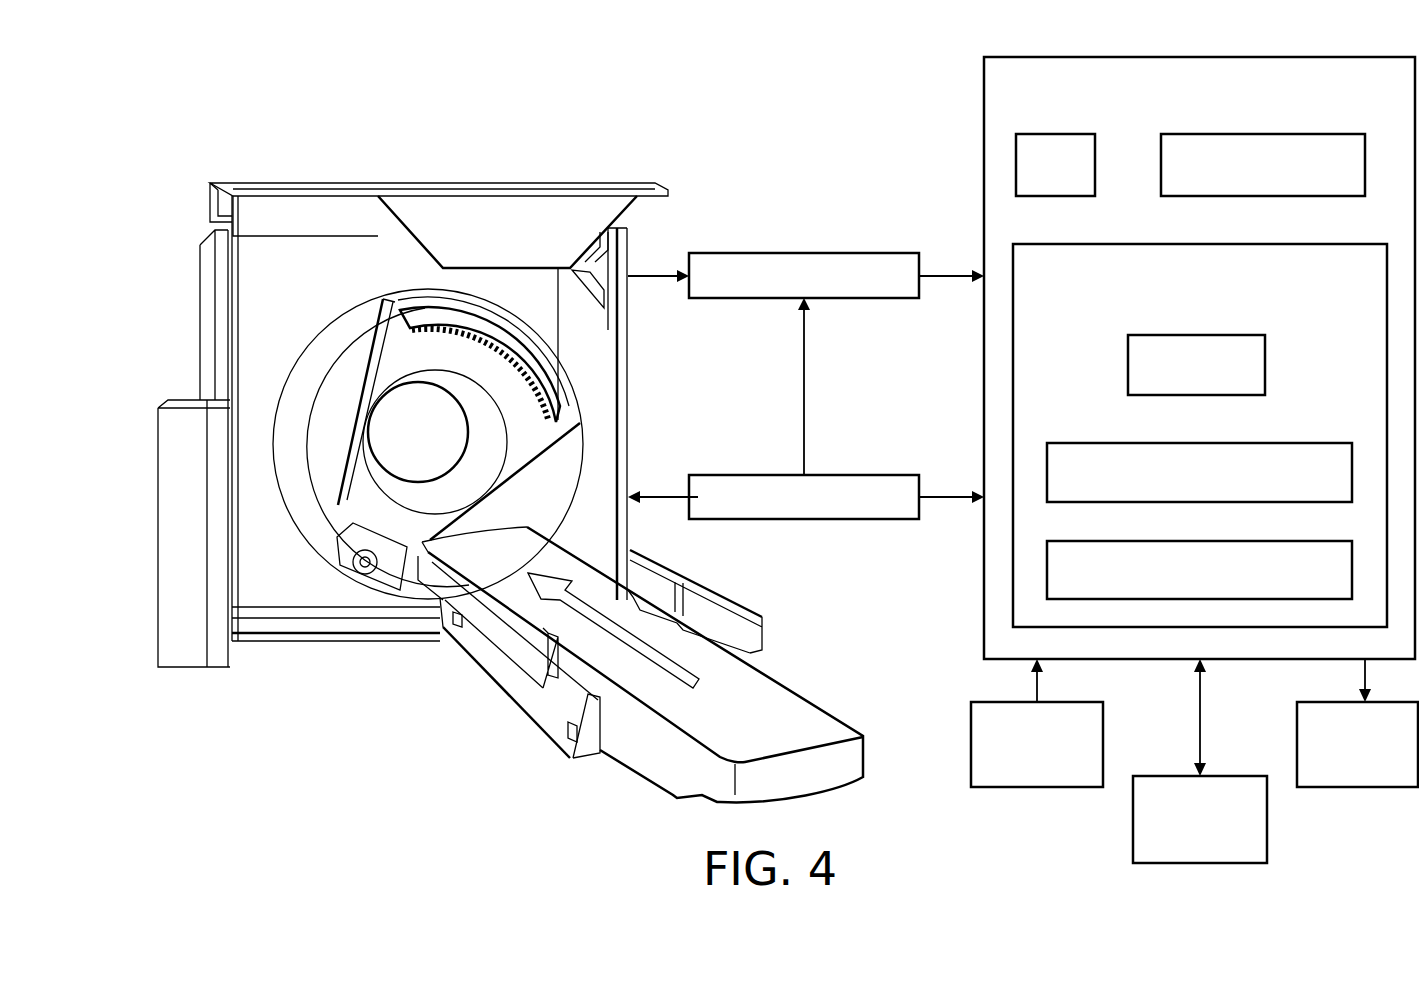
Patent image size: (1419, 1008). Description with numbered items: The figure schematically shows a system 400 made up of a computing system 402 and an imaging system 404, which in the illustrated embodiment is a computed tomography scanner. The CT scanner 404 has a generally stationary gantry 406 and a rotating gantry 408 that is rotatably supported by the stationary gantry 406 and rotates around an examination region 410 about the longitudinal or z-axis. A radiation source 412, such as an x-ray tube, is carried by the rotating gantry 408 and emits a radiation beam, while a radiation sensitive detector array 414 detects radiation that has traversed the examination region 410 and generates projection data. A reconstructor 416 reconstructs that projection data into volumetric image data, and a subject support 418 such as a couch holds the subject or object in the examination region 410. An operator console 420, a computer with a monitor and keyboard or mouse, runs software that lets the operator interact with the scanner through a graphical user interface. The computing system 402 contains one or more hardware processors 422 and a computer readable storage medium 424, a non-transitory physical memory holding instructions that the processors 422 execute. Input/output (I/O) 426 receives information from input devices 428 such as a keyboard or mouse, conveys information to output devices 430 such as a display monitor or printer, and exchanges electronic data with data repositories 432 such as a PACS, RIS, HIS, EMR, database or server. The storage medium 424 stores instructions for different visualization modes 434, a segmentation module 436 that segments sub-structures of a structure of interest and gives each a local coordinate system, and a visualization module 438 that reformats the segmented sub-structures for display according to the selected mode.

The system 400 is at (193, 150).
The computing system 402 is at (984, 85).
The imaging system 404 is at (434, 172).
The stationary gantry 406 is at (212, 337).
The rotating gantry 408 is at (383, 348).
The examination region 410 is at (437, 446).
The radiation source 412 is at (365, 578).
The radiation sensitive detector array 414 is at (498, 333).
The reconstructor 416 is at (803, 253).
The subject support 418 is at (806, 712).
The operator console 420 is at (808, 520).
The hardware processor 422 is at (1224, 134).
The computer readable storage medium 424 is at (1159, 244).
The input/output (I/O) 426 is at (1036, 134).
The input device 428 is at (1017, 787).
The output device 430 is at (1382, 787).
The data repository 432 is at (1267, 830).
The modes 434 is at (1265, 364).
The segmentation module 436 is at (1159, 443).
The visualization module 438 is at (1159, 541).